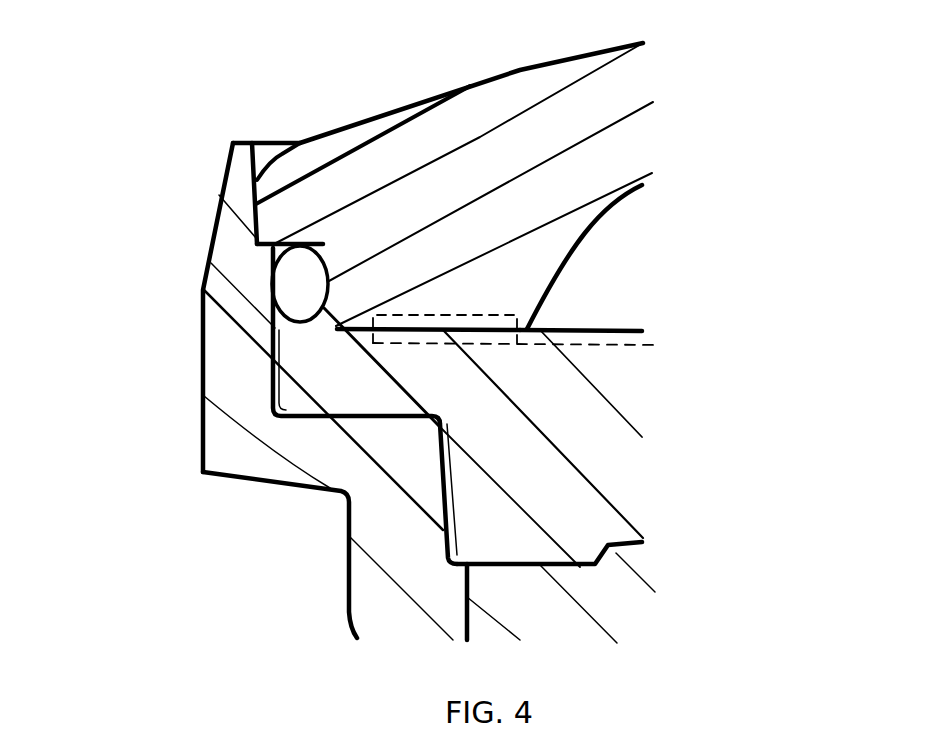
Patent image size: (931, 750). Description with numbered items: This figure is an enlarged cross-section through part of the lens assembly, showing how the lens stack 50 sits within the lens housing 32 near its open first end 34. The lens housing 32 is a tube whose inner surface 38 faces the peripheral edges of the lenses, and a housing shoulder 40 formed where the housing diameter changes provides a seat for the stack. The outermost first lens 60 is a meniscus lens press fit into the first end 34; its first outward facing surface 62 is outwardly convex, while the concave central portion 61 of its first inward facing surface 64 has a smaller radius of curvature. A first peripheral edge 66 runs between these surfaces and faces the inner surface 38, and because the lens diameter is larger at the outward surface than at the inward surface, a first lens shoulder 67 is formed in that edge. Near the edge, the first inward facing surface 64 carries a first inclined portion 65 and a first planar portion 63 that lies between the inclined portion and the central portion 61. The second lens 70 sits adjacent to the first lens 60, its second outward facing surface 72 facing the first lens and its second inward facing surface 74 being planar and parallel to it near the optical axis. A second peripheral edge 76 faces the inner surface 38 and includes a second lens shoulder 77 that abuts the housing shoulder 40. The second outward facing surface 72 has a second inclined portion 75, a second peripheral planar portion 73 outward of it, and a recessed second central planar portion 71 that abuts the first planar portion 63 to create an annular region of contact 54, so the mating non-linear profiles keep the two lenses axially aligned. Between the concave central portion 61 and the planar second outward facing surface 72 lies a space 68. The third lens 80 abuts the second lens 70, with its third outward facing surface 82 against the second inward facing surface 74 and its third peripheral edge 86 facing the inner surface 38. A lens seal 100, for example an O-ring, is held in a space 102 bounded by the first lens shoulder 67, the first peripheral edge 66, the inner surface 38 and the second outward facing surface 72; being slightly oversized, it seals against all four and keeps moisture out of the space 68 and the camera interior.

The lens stack 50 is at (193, 36).
The lens housing 32 is at (220, 357).
The open first end 34 is at (247, 143).
The inner surface 38 is at (260, 158).
The housing shoulder 40 is at (342, 414).
The first lens 60 is at (408, 138).
The first outward facing surface 62 is at (340, 129).
The central portion 61 is at (648, 257).
The first inward facing surface 64 is at (615, 205).
The first planar portion 63 is at (443, 327).
The first inclined portion 65 is at (337, 327).
The first peripheral edge 66 is at (252, 205).
The first lens shoulder 67 is at (256, 247).
The space 68 is at (633, 265).
The second lens 70 is at (587, 437).
The second central planar portion 71 is at (645, 305).
The second outward facing surface 72 is at (613, 327).
The annular region of contact 54 is at (536, 349).
The second peripheral planar portion 73 is at (333, 308).
The second inclined portion 75 is at (340, 334).
The second peripheral edge 76 is at (447, 500).
The second lens shoulder 77 is at (396, 414).
The third lens 80 is at (617, 576).
The third outward facing surface 82 is at (527, 563).
The third peripheral edge 86 is at (467, 593).
The second inward facing surface 74 is at (580, 566).
The lens seal 100 is at (292, 268).
The space 102 is at (272, 256).